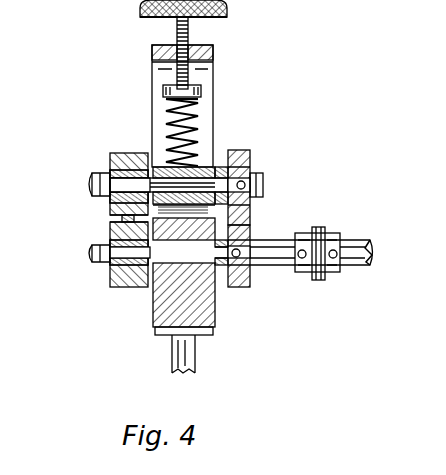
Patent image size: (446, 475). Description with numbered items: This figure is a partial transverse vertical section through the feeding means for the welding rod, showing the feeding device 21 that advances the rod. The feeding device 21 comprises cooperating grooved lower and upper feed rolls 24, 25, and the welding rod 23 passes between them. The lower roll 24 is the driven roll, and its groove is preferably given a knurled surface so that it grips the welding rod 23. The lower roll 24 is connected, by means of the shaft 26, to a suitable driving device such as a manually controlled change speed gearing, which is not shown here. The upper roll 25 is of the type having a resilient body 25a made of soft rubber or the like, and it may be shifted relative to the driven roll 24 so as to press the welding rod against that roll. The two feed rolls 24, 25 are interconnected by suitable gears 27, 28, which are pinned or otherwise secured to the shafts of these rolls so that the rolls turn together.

The feeding device 21 is at (213, 310).
The welding rod 23 is at (112, 219).
The lower feed roll 24 is at (112, 233).
The upper feed roll 25 is at (108, 208).
The resilient body 25a is at (125, 153).
The shaft 26 is at (372, 232).
The gear 27 is at (250, 237).
The gear 28 is at (250, 163).